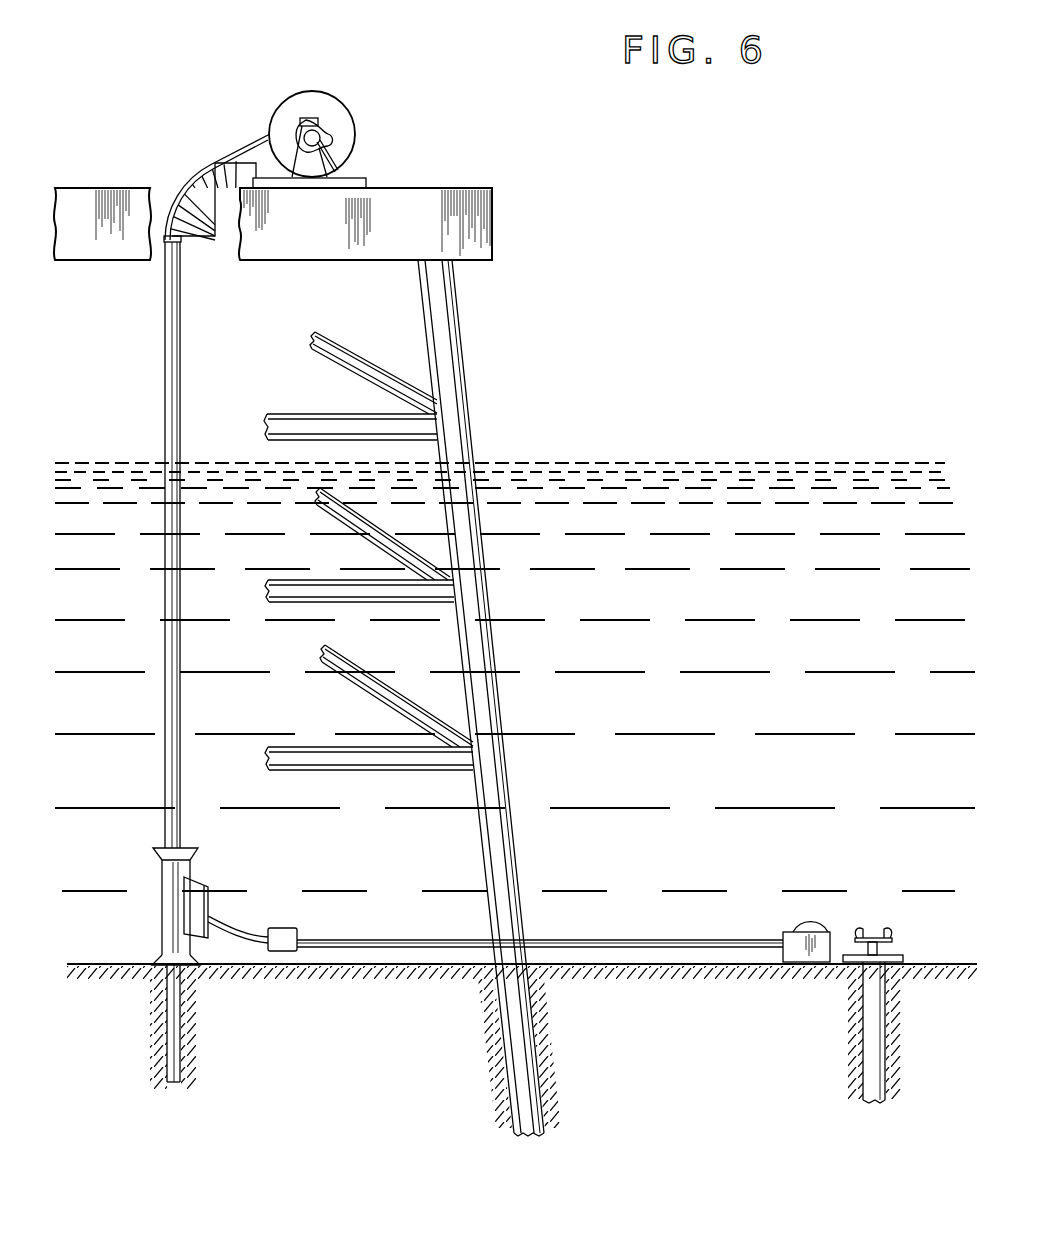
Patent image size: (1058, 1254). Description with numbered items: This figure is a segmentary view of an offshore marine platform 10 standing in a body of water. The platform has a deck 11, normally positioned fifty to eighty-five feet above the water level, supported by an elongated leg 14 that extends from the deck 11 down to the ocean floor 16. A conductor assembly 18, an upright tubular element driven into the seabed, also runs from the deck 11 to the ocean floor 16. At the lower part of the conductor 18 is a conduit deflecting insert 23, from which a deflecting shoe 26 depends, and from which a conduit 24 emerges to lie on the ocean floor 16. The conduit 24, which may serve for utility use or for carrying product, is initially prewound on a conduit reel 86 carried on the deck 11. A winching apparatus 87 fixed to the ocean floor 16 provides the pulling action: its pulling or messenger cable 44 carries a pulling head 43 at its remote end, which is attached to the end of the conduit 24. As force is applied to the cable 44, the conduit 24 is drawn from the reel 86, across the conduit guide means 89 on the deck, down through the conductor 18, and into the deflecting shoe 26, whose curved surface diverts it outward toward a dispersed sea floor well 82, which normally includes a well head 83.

The marine platform 10 is at (480, 184).
The deck 11 is at (494, 222).
The elongated leg 14 is at (452, 386).
The ocean floor 16 is at (365, 968).
The conductor assembly 18 is at (165, 362).
The conduit deflecting insert 23 is at (170, 872).
The conduit 24 is at (240, 937).
The deflecting shoe 26 is at (203, 892).
The pulling head 43 is at (281, 930).
The pulling cable 44 is at (711, 916).
The sea floor well 82 is at (848, 955).
The well head 83 is at (886, 928).
The conduit reel 86 is at (333, 117).
The winching apparatus 87 is at (795, 942).
The conduit guide means 89 is at (228, 165).